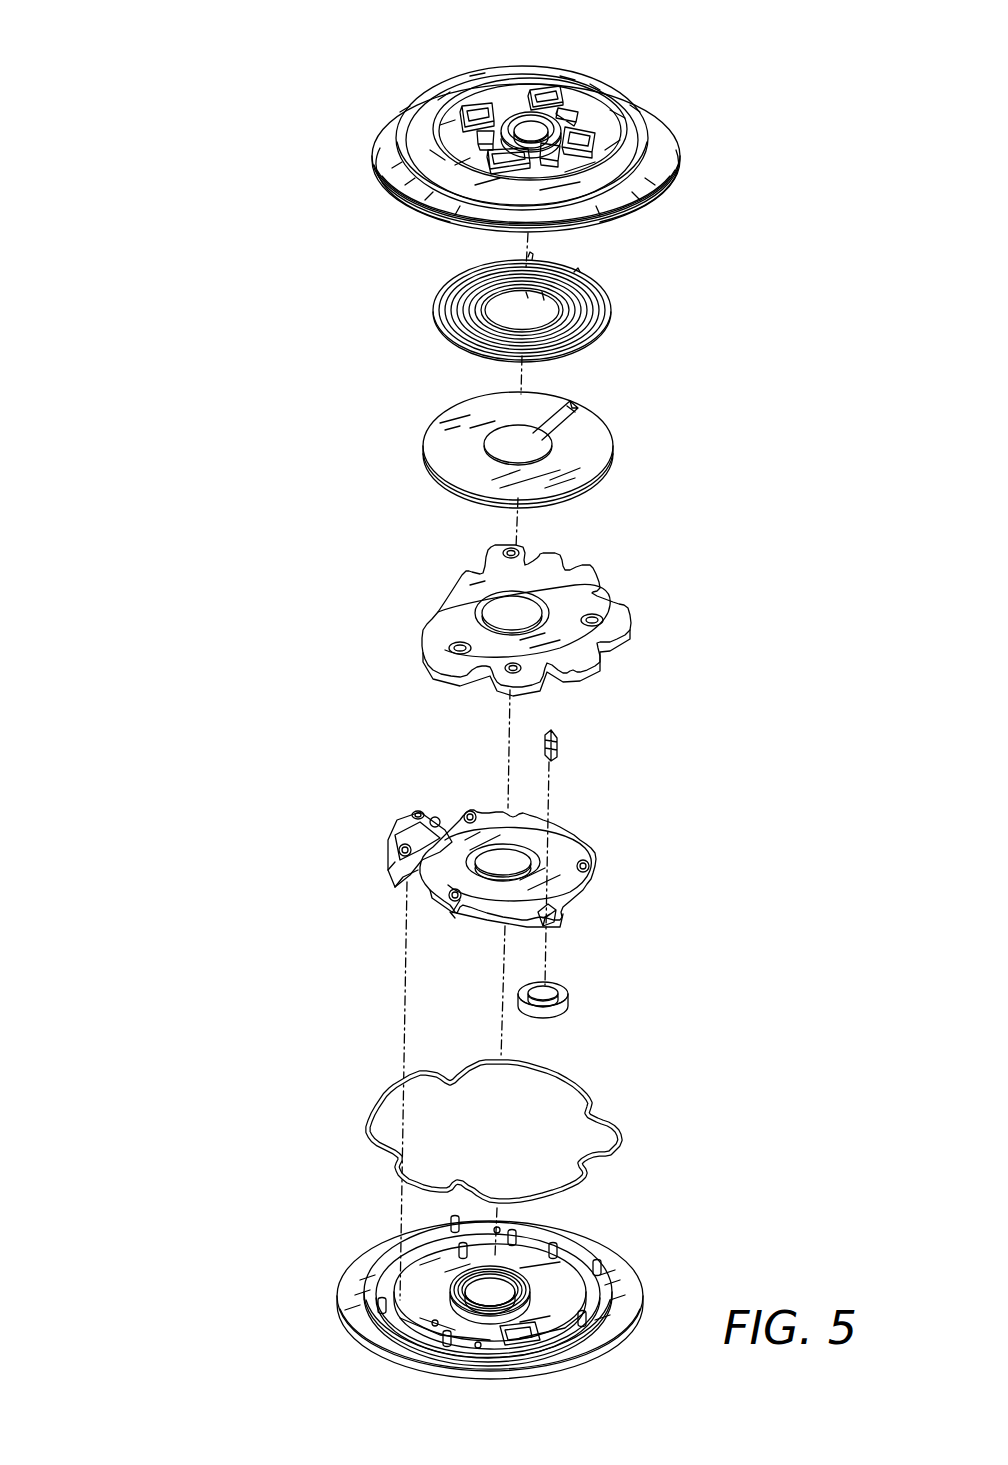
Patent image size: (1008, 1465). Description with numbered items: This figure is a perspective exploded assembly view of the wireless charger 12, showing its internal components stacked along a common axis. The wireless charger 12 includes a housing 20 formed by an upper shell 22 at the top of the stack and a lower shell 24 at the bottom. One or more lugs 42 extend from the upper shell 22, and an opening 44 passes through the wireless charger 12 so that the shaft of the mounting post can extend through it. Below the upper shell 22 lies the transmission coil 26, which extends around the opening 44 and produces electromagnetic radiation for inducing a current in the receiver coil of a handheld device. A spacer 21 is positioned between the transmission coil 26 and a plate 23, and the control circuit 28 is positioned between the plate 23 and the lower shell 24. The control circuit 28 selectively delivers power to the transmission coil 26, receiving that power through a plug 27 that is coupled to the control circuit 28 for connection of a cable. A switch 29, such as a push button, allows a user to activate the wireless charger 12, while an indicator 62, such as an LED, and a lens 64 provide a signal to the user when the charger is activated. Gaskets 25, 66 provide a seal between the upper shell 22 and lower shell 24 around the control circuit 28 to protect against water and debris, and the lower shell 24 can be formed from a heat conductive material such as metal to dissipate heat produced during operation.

The wireless charger 12 is at (170, 135).
The housing 20 is at (672, 88).
The upper shell 22 is at (380, 190).
The lugs 42 is at (553, 85).
The opening 44 is at (508, 128).
The transmission coil 26 is at (612, 322).
The spacer 21 is at (598, 462).
The plate 23 is at (612, 580).
The lens 64 is at (567, 743).
The control circuit 28 is at (597, 840).
The plug 27 is at (372, 860).
The indicator 62 is at (553, 920).
The switch 29 is at (575, 996).
The gasket 25 is at (615, 1105).
The lower shell 24 is at (325, 1300).
The gasket 66 is at (510, 1280).